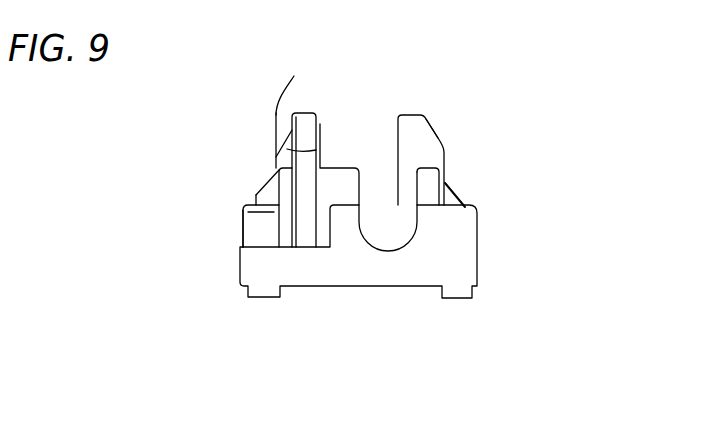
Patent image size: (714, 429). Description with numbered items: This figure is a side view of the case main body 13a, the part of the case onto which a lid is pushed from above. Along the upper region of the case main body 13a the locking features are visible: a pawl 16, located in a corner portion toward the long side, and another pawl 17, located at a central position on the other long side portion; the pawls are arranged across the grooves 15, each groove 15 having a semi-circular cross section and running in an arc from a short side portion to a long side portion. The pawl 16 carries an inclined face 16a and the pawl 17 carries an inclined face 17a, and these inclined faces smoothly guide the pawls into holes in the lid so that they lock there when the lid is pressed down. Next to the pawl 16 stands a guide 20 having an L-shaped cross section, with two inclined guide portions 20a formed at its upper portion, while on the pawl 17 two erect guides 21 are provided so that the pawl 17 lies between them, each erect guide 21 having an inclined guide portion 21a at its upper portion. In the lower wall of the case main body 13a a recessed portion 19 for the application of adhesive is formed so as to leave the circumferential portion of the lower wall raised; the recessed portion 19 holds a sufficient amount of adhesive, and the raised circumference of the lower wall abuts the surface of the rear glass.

The case main body 13a is at (232, 206).
The groove 15 is at (405, 252).
The pawl 16 is at (268, 195).
The inclined face 16a is at (276, 191).
The pawl 17 is at (452, 209).
The inclined face 17a is at (458, 182).
The recessed portion 19 is at (310, 288).
The guide 20 is at (320, 124).
The inclined guide portion 20a is at (307, 122).
The erect guide 21 is at (413, 124).
The inclined guide portion 21a is at (440, 138).